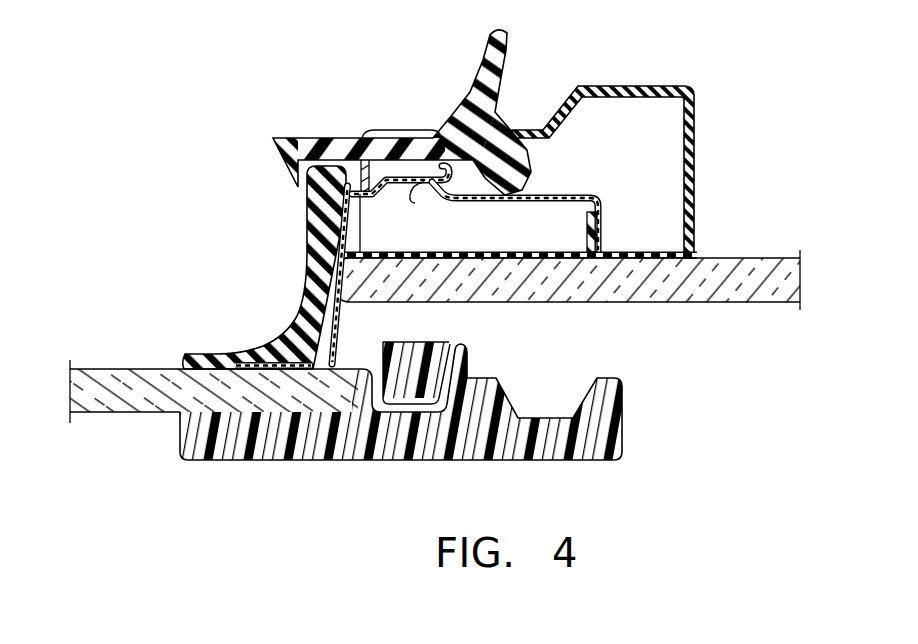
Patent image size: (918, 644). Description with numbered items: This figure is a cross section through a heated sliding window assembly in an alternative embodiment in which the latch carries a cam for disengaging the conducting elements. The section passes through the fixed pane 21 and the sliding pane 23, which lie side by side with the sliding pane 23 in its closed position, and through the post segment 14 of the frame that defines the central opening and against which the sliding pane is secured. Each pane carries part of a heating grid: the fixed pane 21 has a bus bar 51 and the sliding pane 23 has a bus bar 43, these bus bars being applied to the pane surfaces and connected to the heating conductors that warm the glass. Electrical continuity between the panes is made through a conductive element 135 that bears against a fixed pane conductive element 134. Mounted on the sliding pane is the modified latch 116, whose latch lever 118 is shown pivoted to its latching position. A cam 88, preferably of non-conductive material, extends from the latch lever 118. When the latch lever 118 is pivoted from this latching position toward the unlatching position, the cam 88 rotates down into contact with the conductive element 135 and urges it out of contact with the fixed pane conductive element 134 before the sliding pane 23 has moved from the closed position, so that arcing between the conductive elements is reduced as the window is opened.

The post segment 14 is at (453, 364).
The fixed pane 21 is at (160, 413).
The sliding pane 23 is at (719, 266).
The bus bar 43 is at (668, 262).
The bus bar 51 is at (276, 372).
The cam 88 is at (527, 178).
The latch 116 is at (431, 99).
The latch lever 118 is at (480, 82).
The fixed pane conductive element 134 is at (326, 322).
The conductive element 135 is at (514, 192).